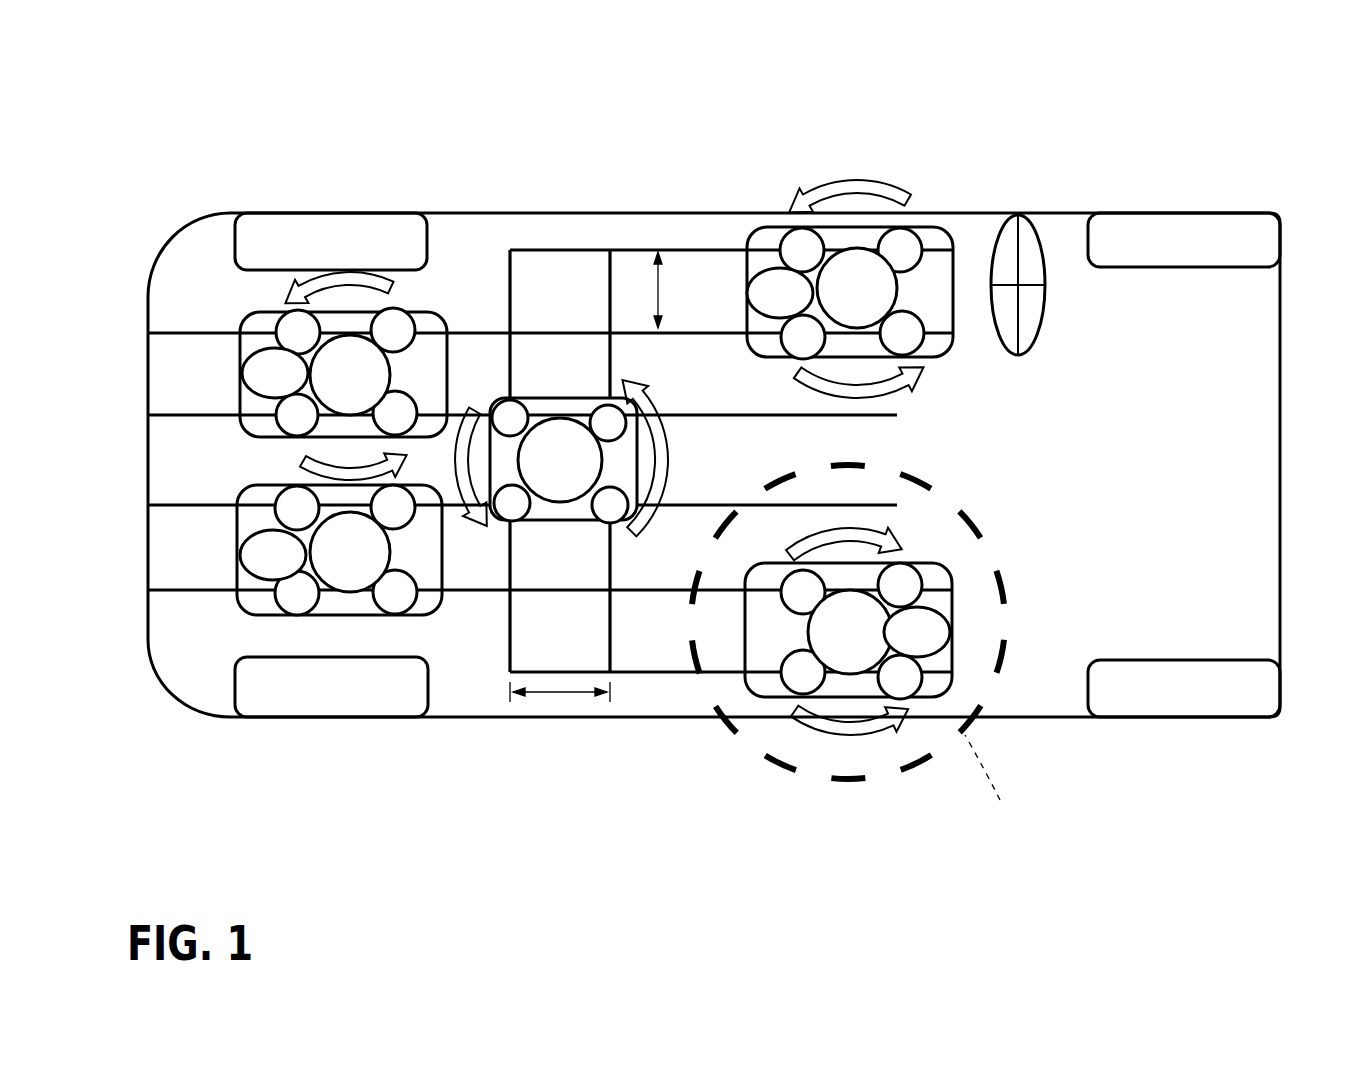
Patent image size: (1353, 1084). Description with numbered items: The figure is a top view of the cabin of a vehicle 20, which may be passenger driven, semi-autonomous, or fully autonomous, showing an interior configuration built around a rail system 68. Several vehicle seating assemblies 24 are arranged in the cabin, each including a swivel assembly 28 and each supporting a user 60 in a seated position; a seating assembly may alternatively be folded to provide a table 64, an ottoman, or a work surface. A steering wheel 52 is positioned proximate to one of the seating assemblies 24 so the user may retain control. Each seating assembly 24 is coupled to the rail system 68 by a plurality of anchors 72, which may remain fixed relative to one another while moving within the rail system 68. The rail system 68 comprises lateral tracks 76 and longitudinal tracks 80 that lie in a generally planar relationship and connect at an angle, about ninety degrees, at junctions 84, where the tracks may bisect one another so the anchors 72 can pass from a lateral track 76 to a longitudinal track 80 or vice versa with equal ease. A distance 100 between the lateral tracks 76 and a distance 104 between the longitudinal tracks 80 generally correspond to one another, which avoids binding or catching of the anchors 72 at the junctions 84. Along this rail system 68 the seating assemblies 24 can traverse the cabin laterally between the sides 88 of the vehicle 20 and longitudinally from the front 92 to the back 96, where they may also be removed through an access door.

The vehicle 20 is at (701, 475).
The vehicle seating assembly 24 is at (238, 312).
The swivel assembly 28 is at (351, 330).
The steering wheel 52 is at (1040, 233).
The user 60 is at (265, 368).
The table 64 is at (600, 545).
The rail system 68 is at (478, 320).
The anchor 72 is at (287, 322).
The lateral track 76 is at (497, 308).
The longitudinal track 80 is at (722, 322).
The junction 84 is at (517, 373).
The side 88 is at (625, 212).
The front 92 is at (1282, 325).
The back 96 is at (147, 472).
The distance between the lateral tracks 100 is at (573, 700).
The distance between the longitudinal tracks 104 is at (672, 292).